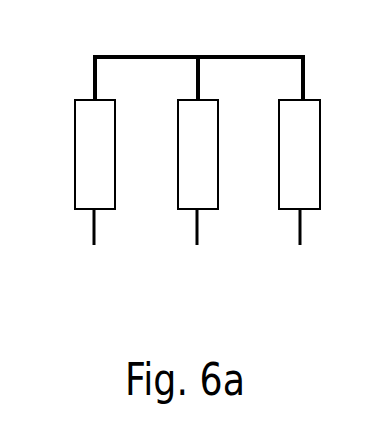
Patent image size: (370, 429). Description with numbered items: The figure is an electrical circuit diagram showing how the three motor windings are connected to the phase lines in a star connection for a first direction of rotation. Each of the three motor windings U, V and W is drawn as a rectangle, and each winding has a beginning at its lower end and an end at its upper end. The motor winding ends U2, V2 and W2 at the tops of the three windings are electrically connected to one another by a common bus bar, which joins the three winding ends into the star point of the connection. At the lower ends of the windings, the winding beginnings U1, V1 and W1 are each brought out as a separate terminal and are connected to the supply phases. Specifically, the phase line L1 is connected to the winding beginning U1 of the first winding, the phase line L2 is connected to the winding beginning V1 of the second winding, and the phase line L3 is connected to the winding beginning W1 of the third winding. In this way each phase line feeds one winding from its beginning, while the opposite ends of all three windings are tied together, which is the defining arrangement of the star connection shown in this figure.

The motor winding end U2 is at (95, 100).
The motor winding end V2 is at (198, 98).
The motor winding end W2 is at (303, 98).
The winding beginning U1 is at (94, 214).
The winding beginning V1 is at (197, 214).
The winding beginning W1 is at (299, 214).
The phase line L1 is at (95, 196).
The phase line L2 is at (198, 196).
The phase line L3 is at (299, 196).